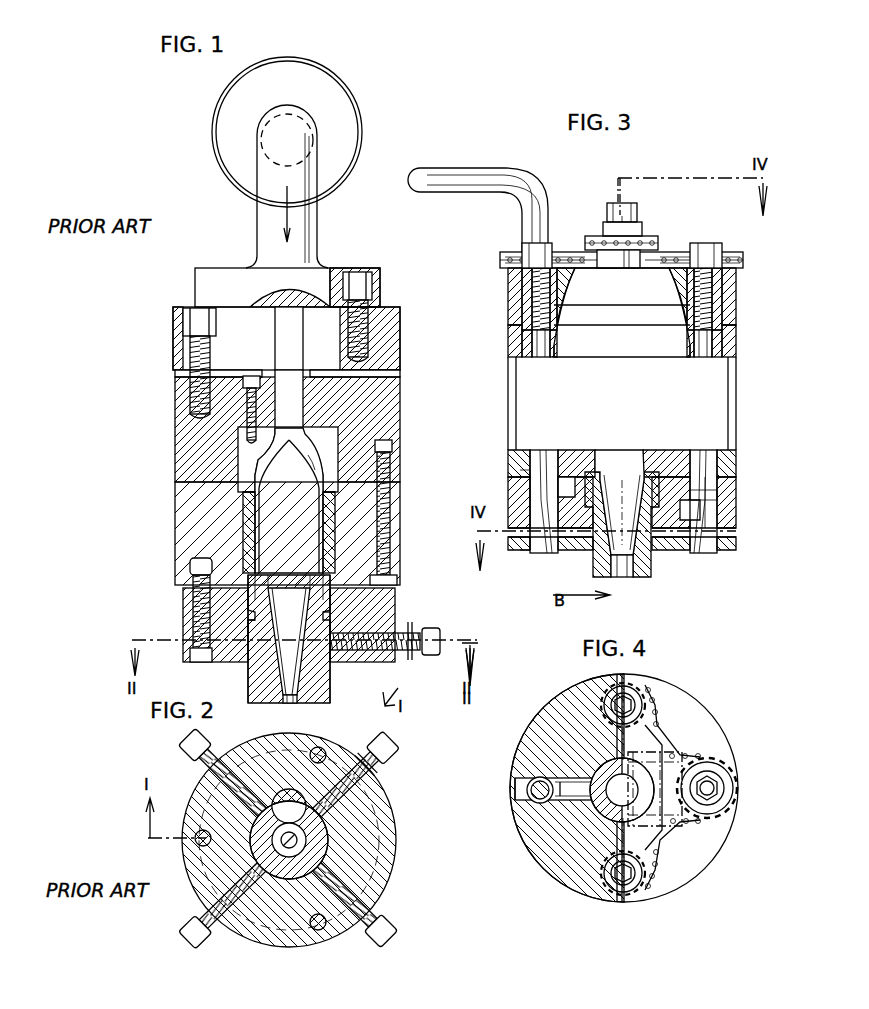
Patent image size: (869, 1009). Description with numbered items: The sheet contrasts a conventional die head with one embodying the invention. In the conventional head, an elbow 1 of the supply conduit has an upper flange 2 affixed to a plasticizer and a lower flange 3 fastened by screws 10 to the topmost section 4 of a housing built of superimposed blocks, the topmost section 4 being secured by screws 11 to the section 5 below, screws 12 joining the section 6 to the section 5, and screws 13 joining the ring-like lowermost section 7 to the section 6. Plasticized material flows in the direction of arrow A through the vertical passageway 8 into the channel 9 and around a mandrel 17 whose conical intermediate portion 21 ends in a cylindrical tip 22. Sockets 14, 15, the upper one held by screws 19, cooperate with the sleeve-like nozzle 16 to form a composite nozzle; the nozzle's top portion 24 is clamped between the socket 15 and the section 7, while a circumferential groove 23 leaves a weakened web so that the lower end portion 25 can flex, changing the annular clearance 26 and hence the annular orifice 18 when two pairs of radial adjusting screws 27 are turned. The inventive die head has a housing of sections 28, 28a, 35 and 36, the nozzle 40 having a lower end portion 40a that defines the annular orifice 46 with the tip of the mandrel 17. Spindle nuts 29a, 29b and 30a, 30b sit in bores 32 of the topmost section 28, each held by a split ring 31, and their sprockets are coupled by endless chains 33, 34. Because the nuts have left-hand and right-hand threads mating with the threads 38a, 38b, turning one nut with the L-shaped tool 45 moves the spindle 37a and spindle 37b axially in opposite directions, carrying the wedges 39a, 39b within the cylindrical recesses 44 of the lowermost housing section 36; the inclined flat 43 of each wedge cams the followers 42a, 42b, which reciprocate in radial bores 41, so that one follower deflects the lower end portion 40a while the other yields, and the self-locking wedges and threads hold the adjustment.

In FIG. 1, the elbow 1 is at (272, 240).
In FIG. 1, the upper flange 2 is at (345, 110).
In FIG. 1, the arrow A is at (290, 204).
In FIG. 1, the lower flange 3 is at (383, 290).
In FIG. 1, the topmost section 4 is at (400, 345).
In FIG. 1, the section 5 is at (400, 414).
In FIG. 1, the section 6 is at (400, 524).
In FIG. 1, the lowermost section 7 is at (395, 619).
In FIG. 2, the lowermost section 7 is at (385, 870).
In FIG. 1, the vertical passageway 8 is at (290, 356).
In FIG. 1, the channel 9 is at (290, 426).
In FIG. 1, the screws 10 is at (400, 316).
In FIG. 1, the screws 11 is at (187, 347).
In FIG. 1, the screws 12 is at (385, 566).
In FIG. 1, the screws 13 is at (198, 615).
In FIG. 2, the screws 13 is at (320, 935).
In FIG. 1, the socket 14 is at (248, 448).
In FIG. 1, the socket 15 is at (248, 504).
In FIG. 1, the nozzle 16 is at (331, 678).
In FIG. 2, the nozzle 16 is at (312, 828).
In FIG. 1, the mandrel 17 is at (296, 531).
In FIG. 3, the mandrel 17 is at (610, 455).
In FIG. 1, the annular orifice 18 is at (283, 695).
In FIG. 1, the screws 19 is at (250, 430).
In FIG. 1, the conical intermediate portion 21 is at (292, 619).
In FIG. 1, the tip 22 is at (287, 703).
In FIG. 1, the circumferential groove 23 is at (252, 640).
In FIG. 1, the top portion 24 is at (332, 595).
In FIG. 1, the lower end portion 25 is at (326, 682).
In FIG. 1, the annular clearance 26 is at (360, 640).
In FIG. 2, the annular clearance 26 is at (297, 840).
In FIG. 1, the adjusting screws 27 is at (432, 640).
In FIG. 2, the adjusting screws 27 is at (398, 930).
In FIG. 3, the topmost section 28 is at (627, 302).
In FIG. 3, the section 28a is at (606, 331).
In FIG. 3, the spindle nut 29a is at (510, 292).
In FIG. 3, the spindle nut 29b is at (735, 292).
In FIG. 4, the spindle nut 29b is at (735, 792).
In FIG. 4, the spindle nut 30a is at (640, 690).
In FIG. 3, the spindle nut 30b is at (645, 230).
In FIG. 4, the spindle nut 30b is at (655, 905).
In FIG. 3, the split ring 31 is at (735, 312).
In FIG. 3, the bore 32 is at (510, 308).
In FIG. 3, the endless chain 33 is at (566, 253).
In FIG. 4, the endless chain 33 is at (700, 755).
In FIG. 3, the endless chain 34 is at (583, 252).
In FIG. 4, the endless chain 34 is at (640, 905).
In FIG. 3, the section 35 is at (636, 423).
In FIG. 3, the lowermost housing section 36 is at (510, 490).
In FIG. 3, the spindle 37a is at (525, 468).
In FIG. 4, the spindle 37a is at (522, 812).
In FIG. 3, the spindle 37b is at (736, 468).
In FIG. 3, the threads 38a is at (512, 342).
In FIG. 3, the threads 38b is at (735, 342).
In FIG. 3, the wedge 39a is at (543, 553).
In FIG. 4, the wedge 39a is at (530, 780).
In FIG. 3, the wedge 39b is at (705, 553).
In FIG. 3, the nozzle 40 is at (660, 585).
In FIG. 4, the nozzle 40 is at (598, 848).
In FIG. 3, the lower end portion 40a is at (604, 580).
In FIG. 3, the radial bores 41 is at (515, 555).
In FIG. 4, the radial bores 41 is at (515, 790).
In FIG. 3, the follower 42a is at (580, 553).
In FIG. 4, the follower 42a is at (572, 800).
In FIG. 3, the follower 42b is at (675, 553).
In FIG. 3, the flat 43 is at (700, 505).
In FIG. 4, the flat 43 is at (530, 738).
In FIG. 3, the cylindrical recesses 44 is at (690, 470).
In FIG. 4, the cylindrical recesses 44 is at (580, 795).
In FIG. 3, the L-shaped tool 45 is at (480, 175).
In FIG. 3, the annular orifice 46 is at (630, 578).